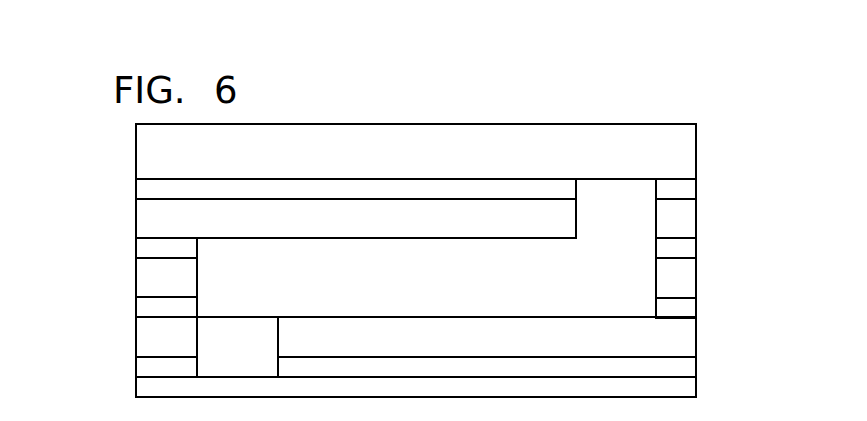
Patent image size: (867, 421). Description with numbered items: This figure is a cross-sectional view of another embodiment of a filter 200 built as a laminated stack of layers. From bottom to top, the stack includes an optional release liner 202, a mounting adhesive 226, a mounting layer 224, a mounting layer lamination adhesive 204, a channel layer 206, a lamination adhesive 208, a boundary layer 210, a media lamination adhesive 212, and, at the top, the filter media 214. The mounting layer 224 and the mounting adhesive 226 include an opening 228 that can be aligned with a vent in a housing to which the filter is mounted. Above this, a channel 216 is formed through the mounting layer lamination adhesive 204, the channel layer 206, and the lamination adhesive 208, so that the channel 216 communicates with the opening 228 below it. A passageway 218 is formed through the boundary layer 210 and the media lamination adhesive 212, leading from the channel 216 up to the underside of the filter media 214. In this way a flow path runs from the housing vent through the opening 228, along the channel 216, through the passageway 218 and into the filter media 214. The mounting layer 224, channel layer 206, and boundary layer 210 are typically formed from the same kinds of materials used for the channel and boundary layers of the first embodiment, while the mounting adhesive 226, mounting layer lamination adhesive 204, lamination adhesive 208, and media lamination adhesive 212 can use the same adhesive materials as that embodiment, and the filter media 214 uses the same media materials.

The filter 200 is at (379, 112).
The release liner 202 is at (696, 387).
The mounting layer lamination adhesive 204 is at (696, 304).
The channel layer 206 is at (696, 273).
The lamination adhesive 208 is at (696, 243).
The boundary layer 210 is at (696, 215).
The media lamination adhesive 212 is at (696, 189).
The filter media 214 is at (696, 152).
The channel 216 is at (232, 277).
The passageway 218 is at (608, 207).
The mounting layer 224 is at (696, 330).
The mounting adhesive 226 is at (696, 365).
The opening 228 is at (237, 344).